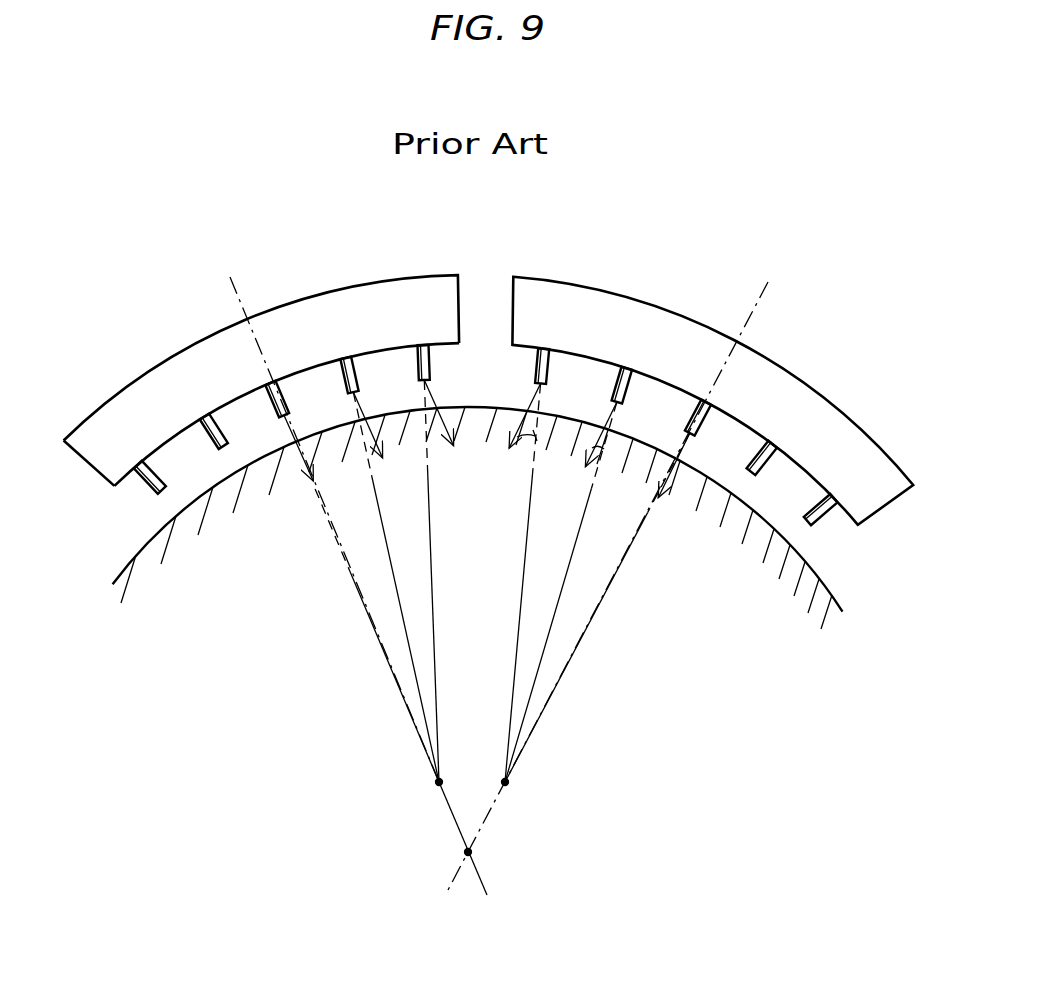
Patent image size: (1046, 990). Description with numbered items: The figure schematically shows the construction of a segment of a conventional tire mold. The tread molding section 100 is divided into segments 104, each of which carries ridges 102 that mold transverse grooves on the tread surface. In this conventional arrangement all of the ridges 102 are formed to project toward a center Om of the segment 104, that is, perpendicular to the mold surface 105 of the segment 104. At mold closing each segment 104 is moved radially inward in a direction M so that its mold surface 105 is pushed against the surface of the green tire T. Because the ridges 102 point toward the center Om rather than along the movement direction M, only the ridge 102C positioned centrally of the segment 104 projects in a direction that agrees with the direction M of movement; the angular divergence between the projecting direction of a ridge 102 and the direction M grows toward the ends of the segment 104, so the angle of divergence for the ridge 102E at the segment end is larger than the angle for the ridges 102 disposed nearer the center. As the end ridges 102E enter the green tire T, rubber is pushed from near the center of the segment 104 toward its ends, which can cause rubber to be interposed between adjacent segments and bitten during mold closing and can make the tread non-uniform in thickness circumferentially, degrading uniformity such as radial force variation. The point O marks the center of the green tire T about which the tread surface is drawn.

The tread molding section 100 is at (622, 260).
The segment 104 is at (410, 275).
The mold surface 105 is at (170, 440).
The ridge 102 is at (147, 484).
The ridge positioned centrally of the segment 102C is at (270, 398).
The ridge at the segment end 102E is at (553, 368).
The green tire T is at (830, 588).
The direction of movement of the segment M is at (535, 400).
The center of the segment Om is at (472, 795).
The center of target surface O is at (479, 853).